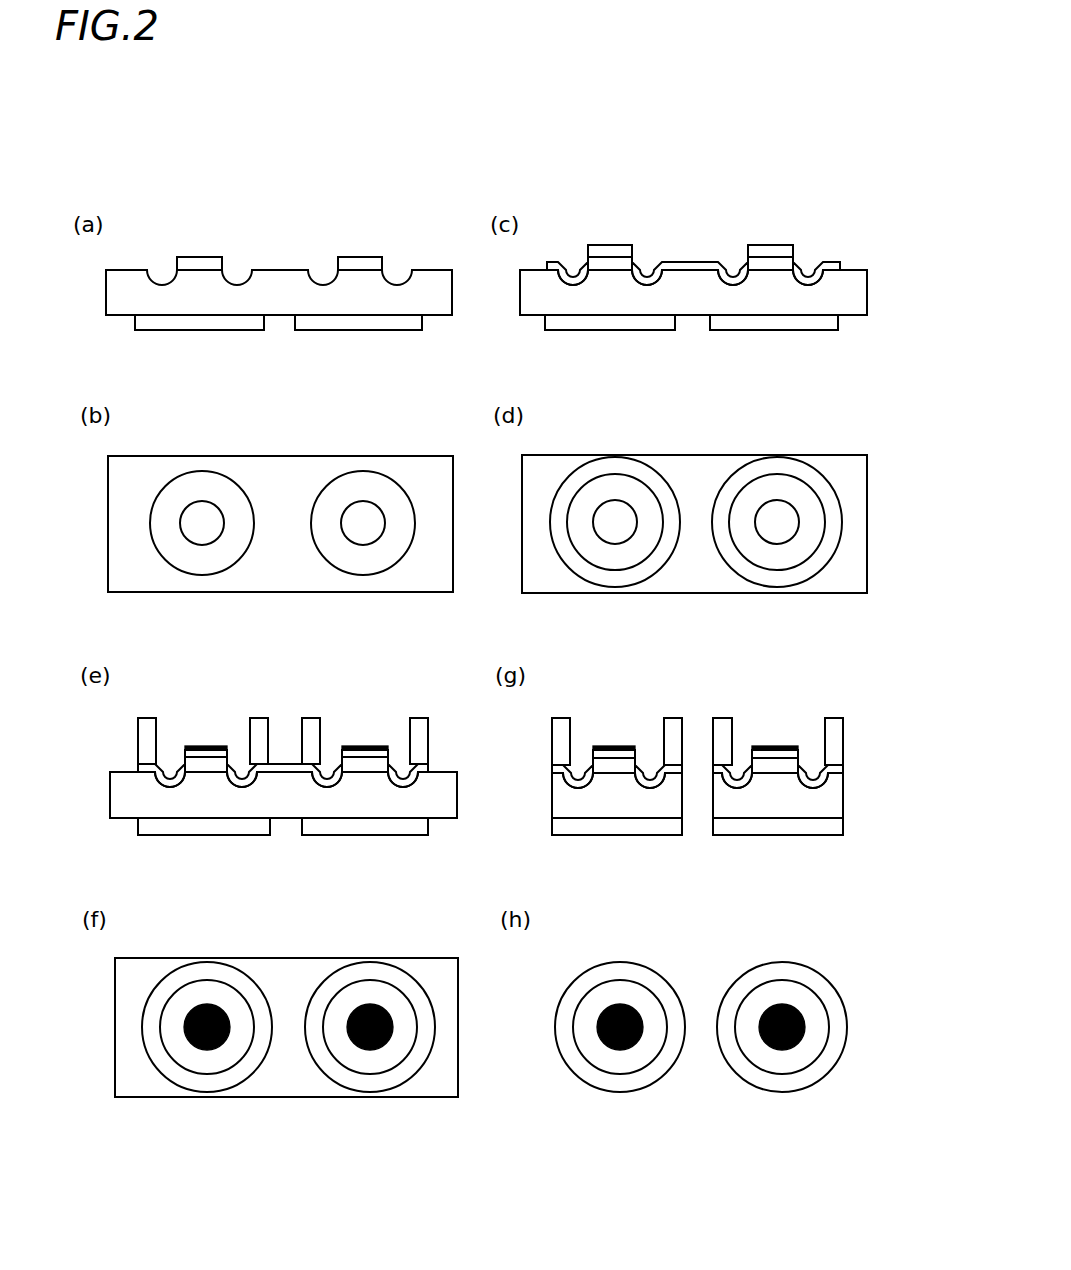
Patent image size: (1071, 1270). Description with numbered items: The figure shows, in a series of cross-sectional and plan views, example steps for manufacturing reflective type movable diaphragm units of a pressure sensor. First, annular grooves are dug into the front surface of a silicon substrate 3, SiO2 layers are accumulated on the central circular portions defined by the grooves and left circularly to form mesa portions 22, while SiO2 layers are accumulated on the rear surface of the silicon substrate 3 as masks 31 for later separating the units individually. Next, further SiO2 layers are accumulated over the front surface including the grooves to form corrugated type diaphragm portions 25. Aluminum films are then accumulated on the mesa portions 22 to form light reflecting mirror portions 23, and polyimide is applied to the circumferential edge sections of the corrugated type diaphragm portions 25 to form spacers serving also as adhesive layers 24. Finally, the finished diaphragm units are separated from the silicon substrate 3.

The silicon substrate 3 is at (255, 285).
The mesa portion 22 is at (187, 263).
The light reflecting mirror portion 23 is at (195, 762).
The spacer serving also as adhesive layer 24 is at (145, 747).
The corrugated type diaphragm portion 25 is at (660, 267).
The mask 31 is at (489, 603).